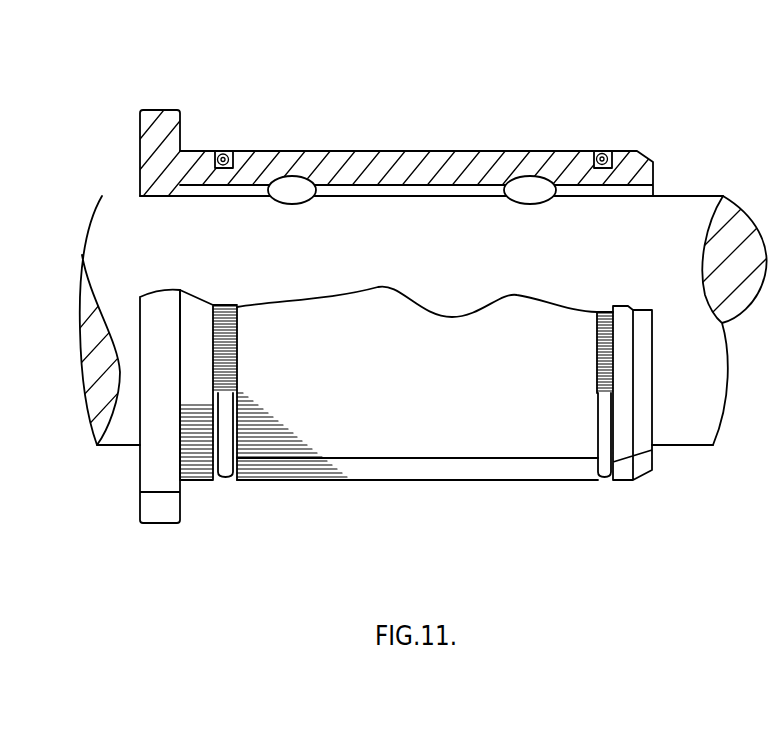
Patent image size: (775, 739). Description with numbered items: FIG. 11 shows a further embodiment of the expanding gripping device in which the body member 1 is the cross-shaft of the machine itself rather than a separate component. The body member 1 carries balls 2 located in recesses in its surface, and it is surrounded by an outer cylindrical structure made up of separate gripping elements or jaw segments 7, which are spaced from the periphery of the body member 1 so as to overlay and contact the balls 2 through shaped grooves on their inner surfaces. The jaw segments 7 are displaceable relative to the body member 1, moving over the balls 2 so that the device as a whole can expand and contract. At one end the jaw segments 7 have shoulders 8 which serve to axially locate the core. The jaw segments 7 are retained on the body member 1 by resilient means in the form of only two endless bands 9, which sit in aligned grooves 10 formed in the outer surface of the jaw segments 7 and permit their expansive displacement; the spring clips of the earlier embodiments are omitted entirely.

The body member 1 is at (663, 218).
The balls 2 is at (291, 178).
The jaw segments 7 is at (408, 165).
The shoulders 8 is at (179, 130).
The bands 9 is at (617, 118).
The grooves 10 is at (611, 480).